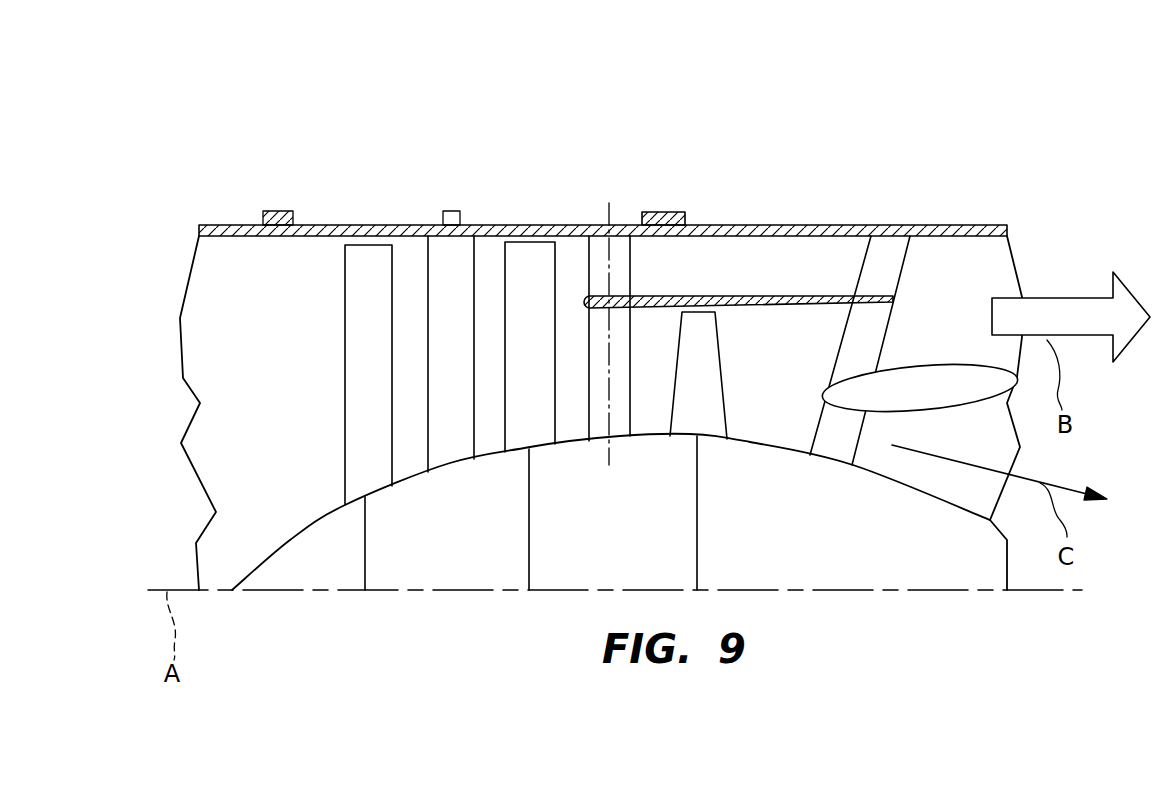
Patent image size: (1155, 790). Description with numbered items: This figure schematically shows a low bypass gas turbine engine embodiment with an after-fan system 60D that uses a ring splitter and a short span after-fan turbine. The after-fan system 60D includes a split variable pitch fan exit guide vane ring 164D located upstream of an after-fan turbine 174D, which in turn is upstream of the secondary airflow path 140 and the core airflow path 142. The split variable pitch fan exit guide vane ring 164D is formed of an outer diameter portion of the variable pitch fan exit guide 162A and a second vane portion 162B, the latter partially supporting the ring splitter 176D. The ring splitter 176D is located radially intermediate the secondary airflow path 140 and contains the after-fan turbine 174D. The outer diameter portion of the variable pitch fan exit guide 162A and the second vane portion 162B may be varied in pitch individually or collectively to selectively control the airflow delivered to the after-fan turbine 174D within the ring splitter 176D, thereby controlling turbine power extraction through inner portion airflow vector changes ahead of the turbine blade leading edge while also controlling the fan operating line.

The after-fan system 60D is at (442, 128).
The secondary airflow path 140 is at (998, 257).
The core airflow path 142 is at (840, 445).
The outer diameter portion of the variable pitch fan exit guide 162A is at (618, 270).
The second vane portion 162B is at (620, 413).
The split variable pitch fan exit guide vane ring 164D is at (603, 232).
The after-fan turbine 174D is at (707, 353).
The ring splitter 176D is at (790, 297).